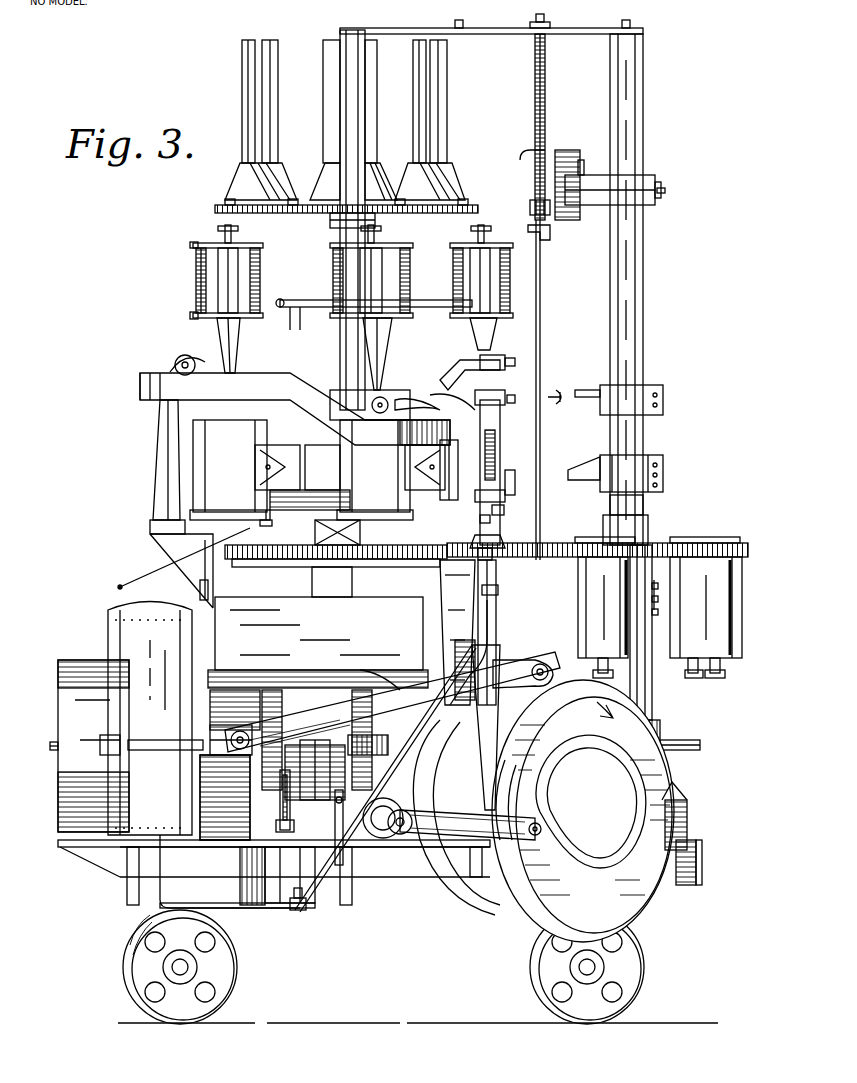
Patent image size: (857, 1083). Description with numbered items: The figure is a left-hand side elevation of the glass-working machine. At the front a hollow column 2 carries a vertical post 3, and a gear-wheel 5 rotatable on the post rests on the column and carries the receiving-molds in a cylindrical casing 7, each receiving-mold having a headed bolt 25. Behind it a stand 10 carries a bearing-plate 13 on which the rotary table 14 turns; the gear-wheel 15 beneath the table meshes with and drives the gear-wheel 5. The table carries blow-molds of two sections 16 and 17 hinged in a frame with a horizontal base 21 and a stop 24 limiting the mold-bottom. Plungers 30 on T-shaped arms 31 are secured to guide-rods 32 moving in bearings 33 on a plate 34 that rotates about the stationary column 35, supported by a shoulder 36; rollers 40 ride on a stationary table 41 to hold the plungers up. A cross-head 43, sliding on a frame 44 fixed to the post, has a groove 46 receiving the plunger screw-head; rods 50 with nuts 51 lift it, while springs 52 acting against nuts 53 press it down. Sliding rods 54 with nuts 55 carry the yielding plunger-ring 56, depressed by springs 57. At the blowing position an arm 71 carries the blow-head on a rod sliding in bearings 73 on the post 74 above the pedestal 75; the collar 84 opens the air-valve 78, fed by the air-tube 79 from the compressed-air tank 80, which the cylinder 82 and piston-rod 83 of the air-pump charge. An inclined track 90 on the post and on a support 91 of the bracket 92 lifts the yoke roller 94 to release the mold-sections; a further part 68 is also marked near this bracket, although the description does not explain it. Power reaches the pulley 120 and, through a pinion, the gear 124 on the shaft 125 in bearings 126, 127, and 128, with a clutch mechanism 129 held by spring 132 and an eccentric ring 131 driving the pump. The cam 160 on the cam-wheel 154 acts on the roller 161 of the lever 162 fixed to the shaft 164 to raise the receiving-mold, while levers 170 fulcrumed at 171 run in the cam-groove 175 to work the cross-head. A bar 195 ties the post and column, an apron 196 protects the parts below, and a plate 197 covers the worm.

The hollow column 2 is at (650, 690).
The vertical post 3 is at (640, 85).
The gear-wheel 5 is at (750, 550).
The cylindrical casing 7 is at (590, 580).
The stand 10 is at (225, 582).
The bearing-plate 13 is at (305, 568).
The rotary table 14 is at (320, 495).
The gear-wheel 15 is at (258, 523).
The mold-section 16 is at (301, 470).
The mold-section 17 is at (512, 450).
The horizontal base 21 is at (50, 750).
The stop 24 is at (500, 530).
The headed bolt 25 is at (725, 675).
The plunger 30 is at (222, 345).
The arm 31 is at (215, 243).
The guide-rod 32 is at (265, 96).
The bearing 33 is at (235, 188).
The plate 34 is at (478, 208).
The stationary column 35 is at (345, 35).
The shoulder 36 is at (335, 222).
The roller 40 is at (282, 300).
The stationary table 41 is at (298, 312).
The cross-head 43 is at (570, 155).
The frame 44 is at (580, 182).
The groove 46 is at (526, 228).
The rod 50 is at (543, 350).
The adjustable nut 51 is at (552, 212).
The spring 52 is at (548, 92).
The nut 53 is at (532, 22).
The sliding rod 54 is at (197, 258).
The nut 55 is at (195, 246).
The plunger-ring 56 is at (197, 316).
The spring 57 is at (196, 282).
The link 68 is at (179, 562).
The arm 71 is at (460, 360).
The bearing 73 is at (485, 590).
The post 74 is at (450, 582).
The pedestal 75 is at (406, 793).
The air-valve 78 is at (478, 540).
The air-tube 79 is at (340, 903).
The compressed-air tank 80 is at (151, 719).
The cylinder 82 is at (306, 908).
The piston-rod 83 is at (293, 833).
The collar 84 is at (665, 470).
The track 90 is at (145, 385).
The support 91 is at (155, 478).
The bracket 92 is at (170, 558).
The roller 94 is at (172, 360).
The pulley 120 is at (90, 662).
The gear 124 is at (280, 690).
The shaft 125 is at (702, 745).
The bearing 126 is at (225, 797).
The bearing 127 is at (455, 743).
The bearing 128 is at (662, 722).
The clutch mechanism 129 is at (328, 778).
The ring 131 is at (392, 702).
The spring 132 is at (362, 748).
The cam-wheel 154 is at (583, 811).
The cam 160 is at (676, 795).
The roller 161 is at (529, 827).
The lever 162 is at (458, 853).
The shaft 164 is at (388, 838).
The lever 170 is at (272, 690).
The fulcrum 171 is at (230, 733).
The cam-groove 175 is at (545, 915).
The bar 195 is at (585, 32).
The apron 196 is at (315, 627).
The plate 197 is at (460, 685).